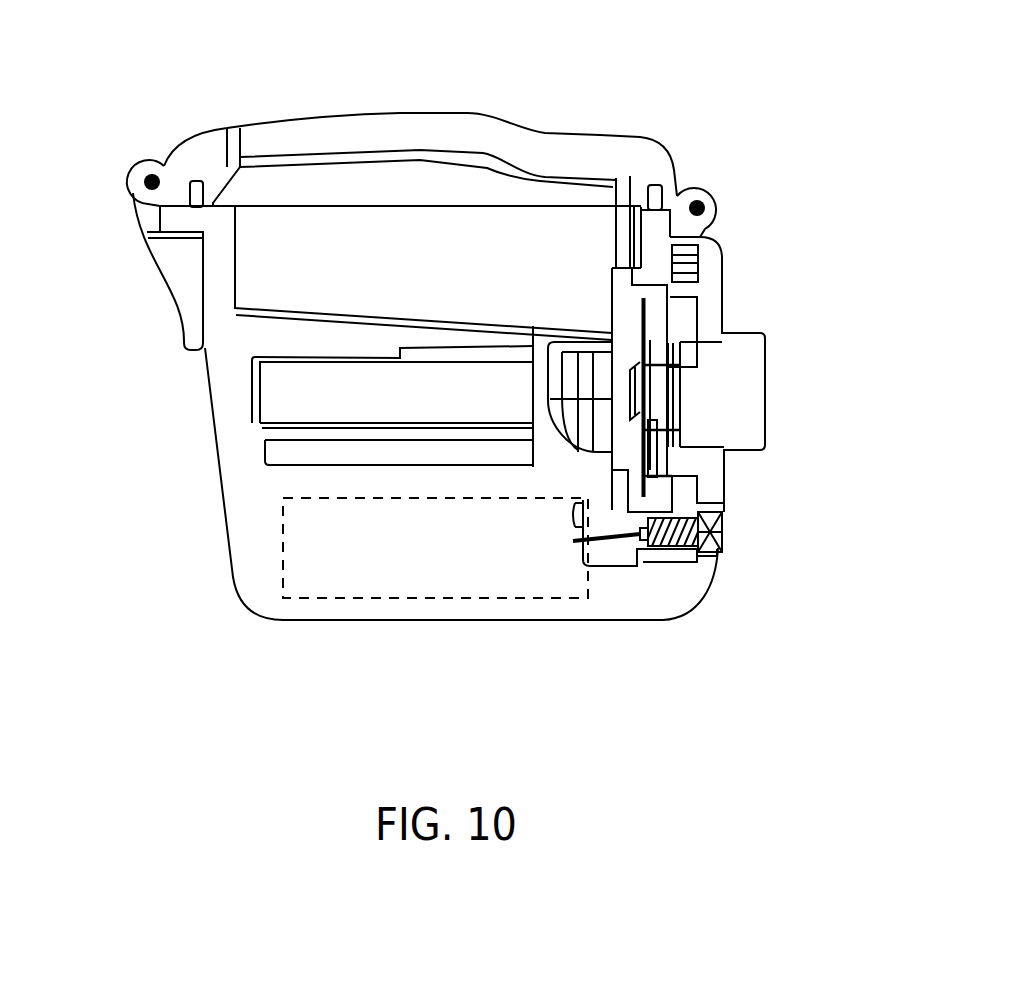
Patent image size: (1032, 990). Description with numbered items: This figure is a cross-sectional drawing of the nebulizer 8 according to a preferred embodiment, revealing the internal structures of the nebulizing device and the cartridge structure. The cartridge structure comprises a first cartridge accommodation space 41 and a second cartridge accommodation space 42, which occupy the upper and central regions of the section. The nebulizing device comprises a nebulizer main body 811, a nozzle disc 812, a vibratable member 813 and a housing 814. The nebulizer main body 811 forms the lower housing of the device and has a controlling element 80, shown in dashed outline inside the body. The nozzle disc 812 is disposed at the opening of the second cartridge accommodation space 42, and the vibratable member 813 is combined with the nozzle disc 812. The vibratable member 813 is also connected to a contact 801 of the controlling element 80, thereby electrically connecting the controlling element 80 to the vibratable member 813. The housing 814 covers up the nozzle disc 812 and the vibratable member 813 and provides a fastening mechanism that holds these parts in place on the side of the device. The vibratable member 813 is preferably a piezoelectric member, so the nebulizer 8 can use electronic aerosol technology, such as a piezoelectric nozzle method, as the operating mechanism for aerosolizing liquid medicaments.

The nebulizer 8 is at (477, 70).
The first cartridge accommodation space 41 is at (277, 267).
The second cartridge accommodation space 42 is at (575, 388).
The controlling element 80 is at (435, 598).
The contact 801 is at (723, 533).
The nebulizer main body 811 is at (245, 535).
The nozzle disc 812 is at (647, 397).
The vibratable member 813 is at (653, 338).
The housing 814 is at (660, 292).